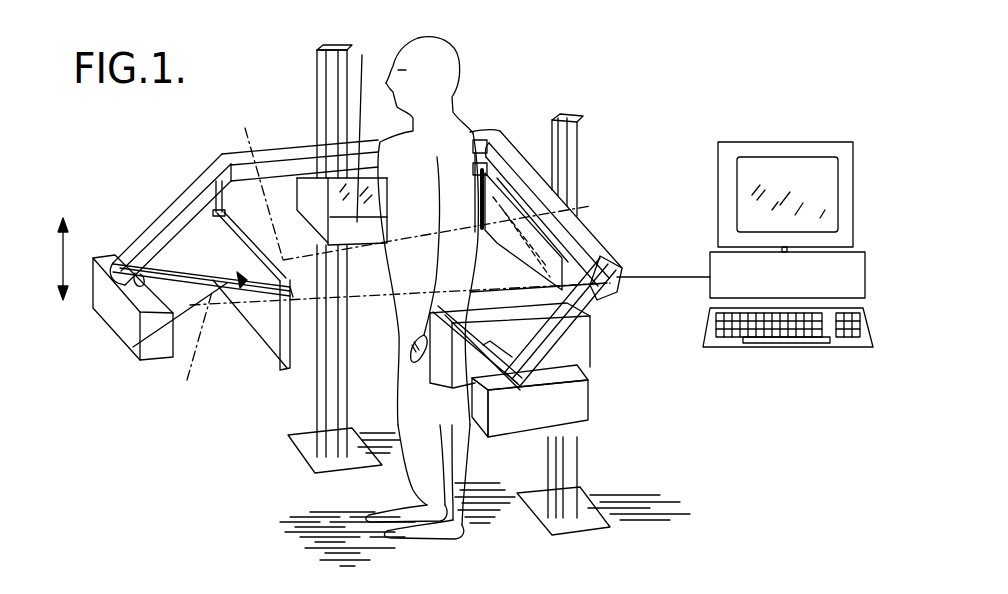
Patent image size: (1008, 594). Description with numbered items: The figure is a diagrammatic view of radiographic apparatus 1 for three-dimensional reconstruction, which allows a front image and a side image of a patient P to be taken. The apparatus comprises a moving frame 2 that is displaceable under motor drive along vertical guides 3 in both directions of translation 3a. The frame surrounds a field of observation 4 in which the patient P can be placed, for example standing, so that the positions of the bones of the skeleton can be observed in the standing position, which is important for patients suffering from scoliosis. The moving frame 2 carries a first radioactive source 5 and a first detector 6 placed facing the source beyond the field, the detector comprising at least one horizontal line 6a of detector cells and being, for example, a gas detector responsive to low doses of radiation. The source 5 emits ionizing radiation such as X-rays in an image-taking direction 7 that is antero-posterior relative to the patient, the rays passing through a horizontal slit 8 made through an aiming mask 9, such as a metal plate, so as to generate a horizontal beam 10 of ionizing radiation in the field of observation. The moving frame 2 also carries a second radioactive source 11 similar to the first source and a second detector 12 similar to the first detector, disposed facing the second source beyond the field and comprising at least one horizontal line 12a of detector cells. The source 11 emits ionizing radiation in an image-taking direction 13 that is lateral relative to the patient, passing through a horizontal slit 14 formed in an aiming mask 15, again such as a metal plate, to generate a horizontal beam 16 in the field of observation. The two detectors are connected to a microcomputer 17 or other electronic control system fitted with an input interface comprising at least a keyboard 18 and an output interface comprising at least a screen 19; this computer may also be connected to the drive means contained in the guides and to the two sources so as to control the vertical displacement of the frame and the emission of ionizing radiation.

The radiographic apparatus 1 is at (618, 130).
The moving frame 2 is at (588, 244).
The vertical guides 3 is at (320, 72).
The directions of translation 3a is at (61, 244).
The field of observation 4 is at (472, 97).
The first radioactive source 5 is at (163, 350).
The first detector 6 is at (617, 259).
The horizontal line of detector cells 6a is at (605, 304).
The image-taking direction 7 is at (396, 336).
The horizontal slit 8 is at (267, 305).
The aiming mask 9 is at (280, 345).
The horizontal beam 10 is at (256, 179).
The second radioactive source 11 is at (577, 402).
The second detector 12 is at (334, 177).
The horizontal line of detector cells 12a is at (374, 124).
The image-taking direction 13 is at (520, 347).
The horizontal slit 14 is at (530, 329).
The aiming mask 15 is at (447, 400).
The horizontal beam 16 is at (590, 207).
The computer 17 is at (845, 282).
The keyboard 18 is at (813, 350).
The screen 19 is at (759, 147).
The patient P is at (452, 148).